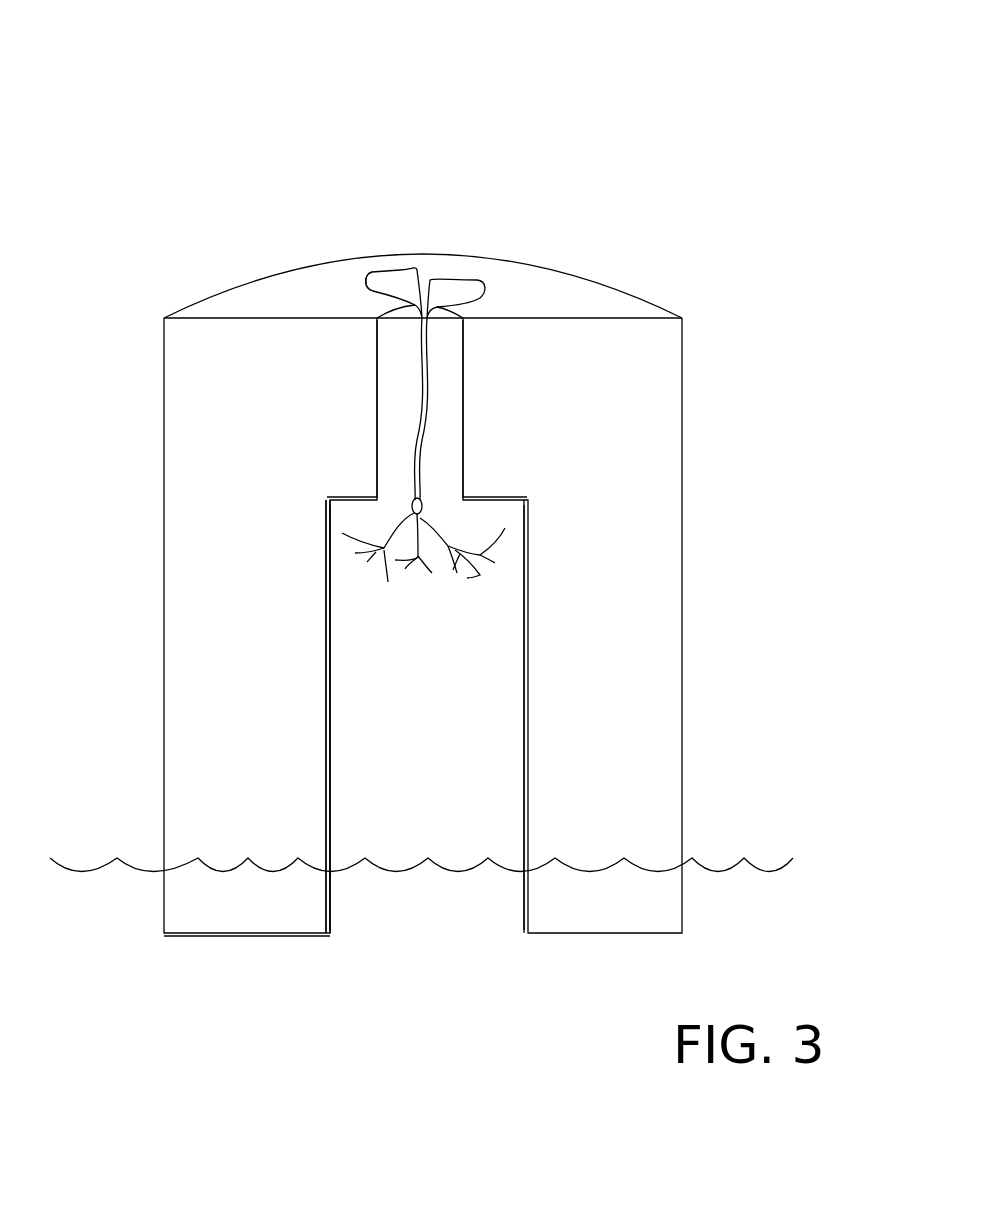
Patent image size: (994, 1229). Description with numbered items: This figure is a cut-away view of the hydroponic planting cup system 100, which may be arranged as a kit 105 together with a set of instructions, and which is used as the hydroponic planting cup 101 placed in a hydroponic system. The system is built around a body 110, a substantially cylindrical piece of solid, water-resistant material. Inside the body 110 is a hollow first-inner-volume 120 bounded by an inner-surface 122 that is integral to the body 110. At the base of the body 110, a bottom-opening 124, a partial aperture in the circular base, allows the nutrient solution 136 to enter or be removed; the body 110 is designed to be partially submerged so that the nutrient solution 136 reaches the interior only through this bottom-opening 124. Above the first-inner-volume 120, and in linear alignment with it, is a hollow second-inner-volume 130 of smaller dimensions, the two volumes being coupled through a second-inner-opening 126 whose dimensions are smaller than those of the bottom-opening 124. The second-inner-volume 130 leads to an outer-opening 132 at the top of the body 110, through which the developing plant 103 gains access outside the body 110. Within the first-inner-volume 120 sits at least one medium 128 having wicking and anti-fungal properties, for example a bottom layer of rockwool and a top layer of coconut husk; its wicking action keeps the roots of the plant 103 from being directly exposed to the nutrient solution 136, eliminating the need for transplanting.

The hydroponic planting cup system 100 is at (630, 101).
The kit 105 is at (650, 126).
The body 110 is at (651, 478).
The hydroponic planting cup 101 is at (710, 572).
The plant 103 is at (410, 280).
The second-inner-volume 130 is at (447, 345).
The outer-opening 132 is at (387, 313).
The second-inner-opening 126 is at (441, 507).
The medium 128 is at (492, 572).
The inner-surface 122 is at (326, 733).
The first-inner-volume 120 is at (500, 800).
The bottom-opening 124 is at (360, 933).
The nutrient solution 136 is at (148, 875).